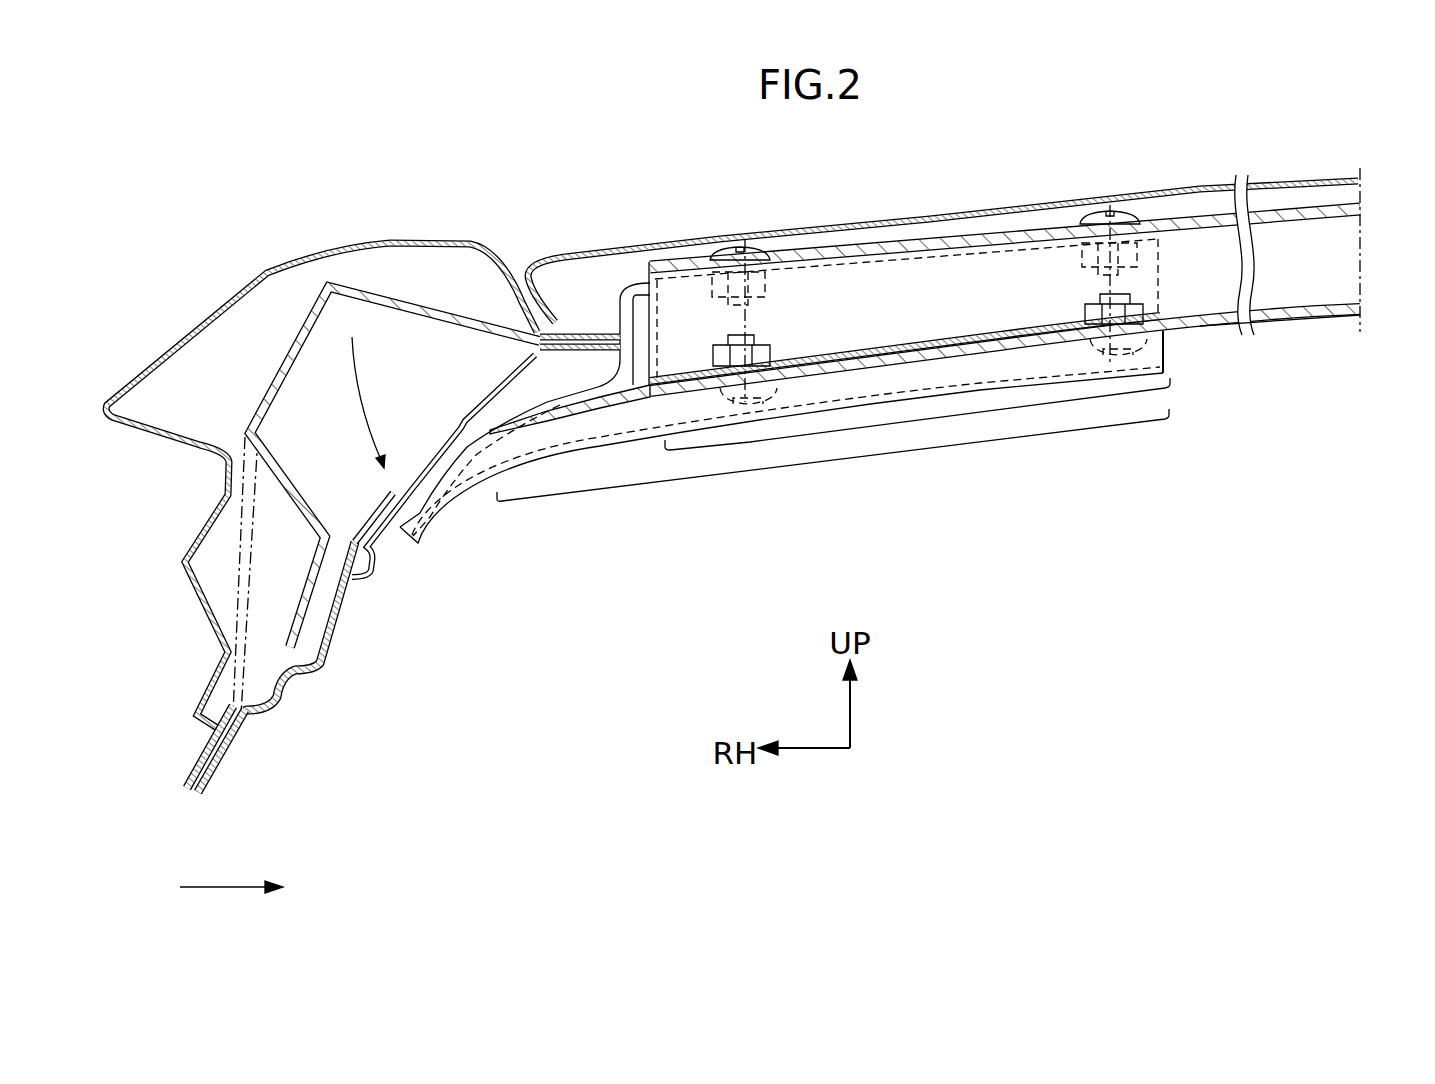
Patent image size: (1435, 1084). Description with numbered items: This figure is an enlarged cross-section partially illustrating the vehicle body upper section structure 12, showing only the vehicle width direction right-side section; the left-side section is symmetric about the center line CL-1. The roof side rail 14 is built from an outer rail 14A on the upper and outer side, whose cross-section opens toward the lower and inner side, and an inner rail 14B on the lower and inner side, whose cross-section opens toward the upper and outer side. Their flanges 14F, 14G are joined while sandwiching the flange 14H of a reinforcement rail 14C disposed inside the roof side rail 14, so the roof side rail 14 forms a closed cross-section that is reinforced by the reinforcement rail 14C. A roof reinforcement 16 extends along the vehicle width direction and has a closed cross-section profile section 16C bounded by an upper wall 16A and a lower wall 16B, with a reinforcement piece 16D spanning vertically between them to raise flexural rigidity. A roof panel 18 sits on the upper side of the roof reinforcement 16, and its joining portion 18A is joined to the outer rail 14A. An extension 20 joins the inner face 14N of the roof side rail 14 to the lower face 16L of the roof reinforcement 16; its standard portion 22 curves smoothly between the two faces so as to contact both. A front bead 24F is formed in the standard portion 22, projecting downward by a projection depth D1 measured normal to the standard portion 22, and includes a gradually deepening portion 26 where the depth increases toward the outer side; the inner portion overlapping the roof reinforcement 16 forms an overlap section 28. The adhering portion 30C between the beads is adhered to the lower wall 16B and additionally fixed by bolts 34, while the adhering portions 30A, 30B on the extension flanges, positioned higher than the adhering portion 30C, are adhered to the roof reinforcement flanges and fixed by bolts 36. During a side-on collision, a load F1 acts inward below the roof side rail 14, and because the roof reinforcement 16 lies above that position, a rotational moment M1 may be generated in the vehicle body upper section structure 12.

The vehicle body upper section structure 12 is at (1025, 628).
The roof side rail 14 is at (160, 455).
The outer rail 14A is at (207, 310).
The inner rail 14B is at (287, 697).
The reinforcement rail 14C is at (297, 356).
The flange 14F is at (203, 761).
The flange 14G is at (217, 770).
The flange 14H is at (195, 790).
The inner face 14N is at (375, 547).
The roof reinforcement 16 is at (1283, 368).
The upper wall 16A is at (1355, 213).
The lower wall 16B is at (1335, 316).
The closed cross-section profile section 16C is at (635, 283).
The reinforcement piece 16D is at (1350, 270).
The lower face 16L is at (1232, 322).
The roof panel 18 is at (1178, 165).
The joining portion 18A is at (538, 283).
The extension 20 is at (454, 533).
The standard portion 22 is at (1163, 334).
The front bead 24F is at (963, 382).
The gradually deepening portion 26 is at (827, 462).
The overlap section 28 is at (910, 413).
The adhering portion 30A is at (930, 268).
The adhering portion 30B is at (930, 270).
The adhering portion 30C is at (1000, 340).
The bolt 34 is at (712, 388).
The bolt 36 is at (748, 252).
The rotational moment M1 is at (362, 418).
The projection depth D1 is at (787, 403).
The center line CL-1 is at (1360, 170).
The load F1 is at (218, 887).